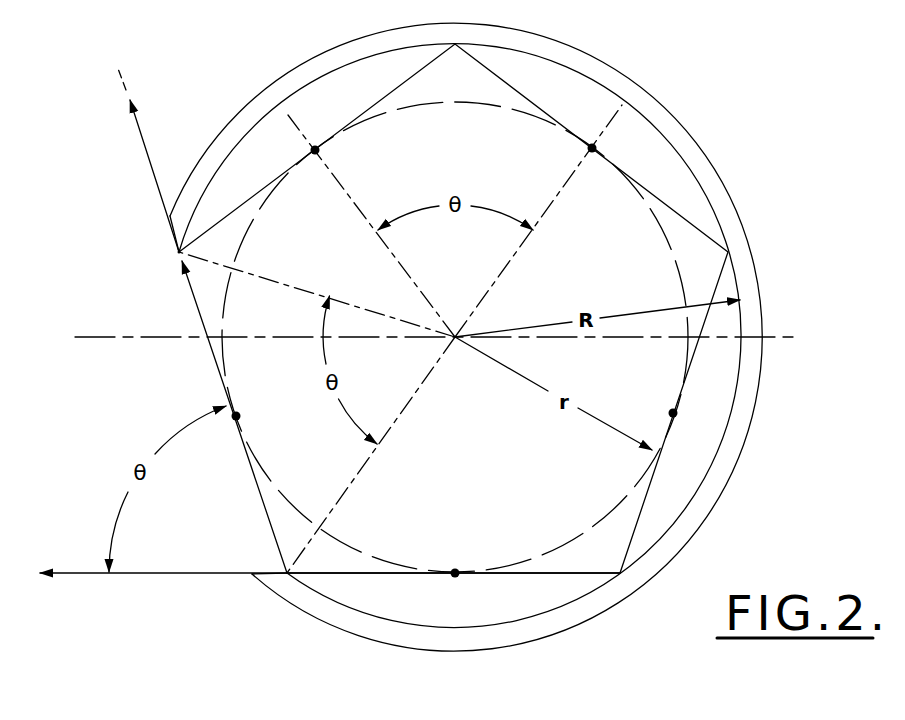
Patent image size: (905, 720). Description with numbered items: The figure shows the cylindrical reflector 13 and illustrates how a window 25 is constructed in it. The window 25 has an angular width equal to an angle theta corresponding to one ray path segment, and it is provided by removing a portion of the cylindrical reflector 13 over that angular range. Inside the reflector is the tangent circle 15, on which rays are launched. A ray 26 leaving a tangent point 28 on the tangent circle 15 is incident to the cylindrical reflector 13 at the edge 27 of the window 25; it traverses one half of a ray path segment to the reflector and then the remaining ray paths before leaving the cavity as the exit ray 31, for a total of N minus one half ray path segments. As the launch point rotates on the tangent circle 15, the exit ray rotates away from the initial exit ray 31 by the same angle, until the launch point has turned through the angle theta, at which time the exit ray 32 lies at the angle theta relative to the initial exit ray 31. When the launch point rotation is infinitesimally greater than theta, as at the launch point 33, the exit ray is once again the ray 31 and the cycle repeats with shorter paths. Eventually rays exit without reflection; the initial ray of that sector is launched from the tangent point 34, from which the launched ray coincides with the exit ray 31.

The cylindrical reflector 13 is at (662, 132).
The tangent circle 15 is at (598, 520).
The window 25 is at (150, 305).
The ray 26 is at (210, 347).
The edge of window 27 is at (178, 250).
The tangent point 28 is at (236, 422).
The exit ray 31 is at (173, 575).
The exit ray 32 is at (135, 108).
The launch point 33 is at (315, 148).
The tangent point 34 is at (455, 570).